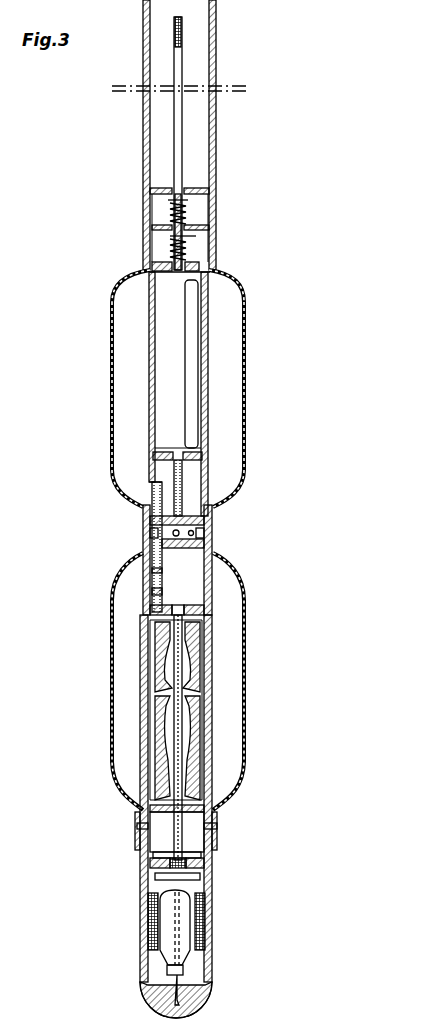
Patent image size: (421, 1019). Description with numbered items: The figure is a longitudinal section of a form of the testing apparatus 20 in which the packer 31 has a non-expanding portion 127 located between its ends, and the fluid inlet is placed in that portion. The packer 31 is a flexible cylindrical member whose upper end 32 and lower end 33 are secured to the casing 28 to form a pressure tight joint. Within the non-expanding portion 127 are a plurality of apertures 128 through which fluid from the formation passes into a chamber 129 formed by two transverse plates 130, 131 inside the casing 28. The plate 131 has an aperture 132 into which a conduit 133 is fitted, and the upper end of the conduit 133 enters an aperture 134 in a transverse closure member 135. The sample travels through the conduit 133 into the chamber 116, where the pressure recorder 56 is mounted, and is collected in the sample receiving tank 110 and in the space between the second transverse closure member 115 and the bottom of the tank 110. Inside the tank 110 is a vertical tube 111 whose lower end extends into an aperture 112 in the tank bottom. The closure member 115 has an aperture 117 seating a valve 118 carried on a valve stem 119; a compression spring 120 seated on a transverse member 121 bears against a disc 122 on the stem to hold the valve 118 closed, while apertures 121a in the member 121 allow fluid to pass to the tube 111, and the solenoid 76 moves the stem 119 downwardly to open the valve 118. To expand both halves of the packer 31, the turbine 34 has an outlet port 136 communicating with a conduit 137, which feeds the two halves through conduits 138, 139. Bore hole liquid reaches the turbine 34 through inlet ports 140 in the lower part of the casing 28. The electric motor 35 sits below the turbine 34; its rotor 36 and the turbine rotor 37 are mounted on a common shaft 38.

The testing apparatus 20 is at (98, 674).
The casing 28 is at (208, 328).
The packer 31 is at (246, 414).
The upper end of packer 32 is at (148, 242).
The lower end of packer 33 is at (216, 820).
The turbine mechanism 34 is at (196, 712).
The electric motor 35 is at (183, 889).
The rotor of the motor 36 is at (182, 926).
The rotor of the turbine mechanism 37 is at (190, 738).
The common shaft 38 is at (180, 840).
The pressure recorder 56 is at (192, 372).
The solenoid 76 is at (170, 248).
The sample receiving tank 110 is at (213, 122).
The vertical tube 111 is at (183, 146).
The aperture 112 is at (183, 186).
The second transverse closure member 115 is at (222, 272).
The chamber 116 is at (165, 362).
The aperture 117 is at (150, 265).
The valve 118 is at (168, 280).
The valve stem 119 is at (205, 239).
The compression spring 120 is at (197, 213).
The transverse member 121 is at (205, 228).
The apertures 121a is at (160, 228).
The disc 122 is at (200, 199).
The non-expanding portion 127 is at (210, 548).
The apertures 128 is at (213, 532).
The chamber 129 is at (191, 540).
The transverse plate 130 is at (225, 583).
The transverse plate 131 is at (210, 520).
The aperture 132 is at (212, 494).
The conduit 133 is at (182, 470).
The aperture 134 is at (202, 456).
The transverse closure member 135 is at (165, 450).
The outlet port 136 is at (148, 618).
The conduit 137 is at (152, 592).
The conduit 138 is at (150, 572).
The conduit 139 is at (152, 484).
The inlet ports 140 is at (140, 828).